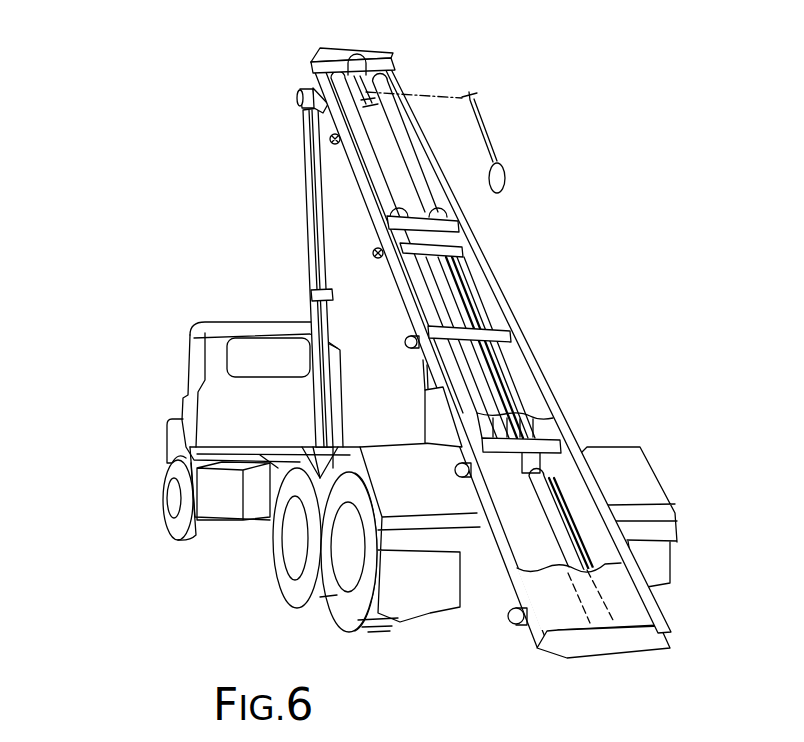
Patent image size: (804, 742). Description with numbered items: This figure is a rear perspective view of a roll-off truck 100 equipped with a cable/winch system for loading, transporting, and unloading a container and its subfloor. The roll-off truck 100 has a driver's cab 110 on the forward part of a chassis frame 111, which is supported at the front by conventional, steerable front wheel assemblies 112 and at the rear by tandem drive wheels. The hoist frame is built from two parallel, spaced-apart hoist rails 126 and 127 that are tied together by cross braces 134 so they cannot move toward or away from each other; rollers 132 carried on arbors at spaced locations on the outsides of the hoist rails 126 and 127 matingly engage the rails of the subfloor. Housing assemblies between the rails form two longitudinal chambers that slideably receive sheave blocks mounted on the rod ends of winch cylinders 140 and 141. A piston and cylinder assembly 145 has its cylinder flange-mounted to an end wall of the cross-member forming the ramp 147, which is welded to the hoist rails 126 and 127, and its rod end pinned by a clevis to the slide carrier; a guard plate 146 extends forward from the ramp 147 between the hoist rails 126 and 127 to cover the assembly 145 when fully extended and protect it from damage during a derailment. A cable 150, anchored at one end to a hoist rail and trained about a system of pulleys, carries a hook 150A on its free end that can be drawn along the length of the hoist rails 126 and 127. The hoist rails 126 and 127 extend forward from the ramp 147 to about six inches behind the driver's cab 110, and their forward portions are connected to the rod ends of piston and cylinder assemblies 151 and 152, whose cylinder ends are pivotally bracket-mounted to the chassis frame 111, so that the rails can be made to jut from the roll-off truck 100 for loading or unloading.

The roll-off truck 100 is at (115, 69).
The driver's cab 110 is at (218, 323).
The chassis frame 111 is at (237, 443).
The front wheel assemblies 112 is at (156, 497).
The hoist rail 126 is at (404, 297).
The hoist rail 127 is at (490, 260).
The rollers 132 is at (335, 145).
The cross braces 134 is at (395, 60).
The winch cylinder 140 is at (344, 74).
The winch cylinder 141 is at (412, 160).
The piston and cylinder assembly 145 is at (541, 484).
The guard plate 146 is at (620, 600).
The ramp 147 is at (637, 637).
The cable 150 is at (371, 104).
The hook 150A is at (505, 180).
The piston and cylinder assembly 151 is at (308, 296).
The piston and cylinder assembly 152 is at (418, 418).